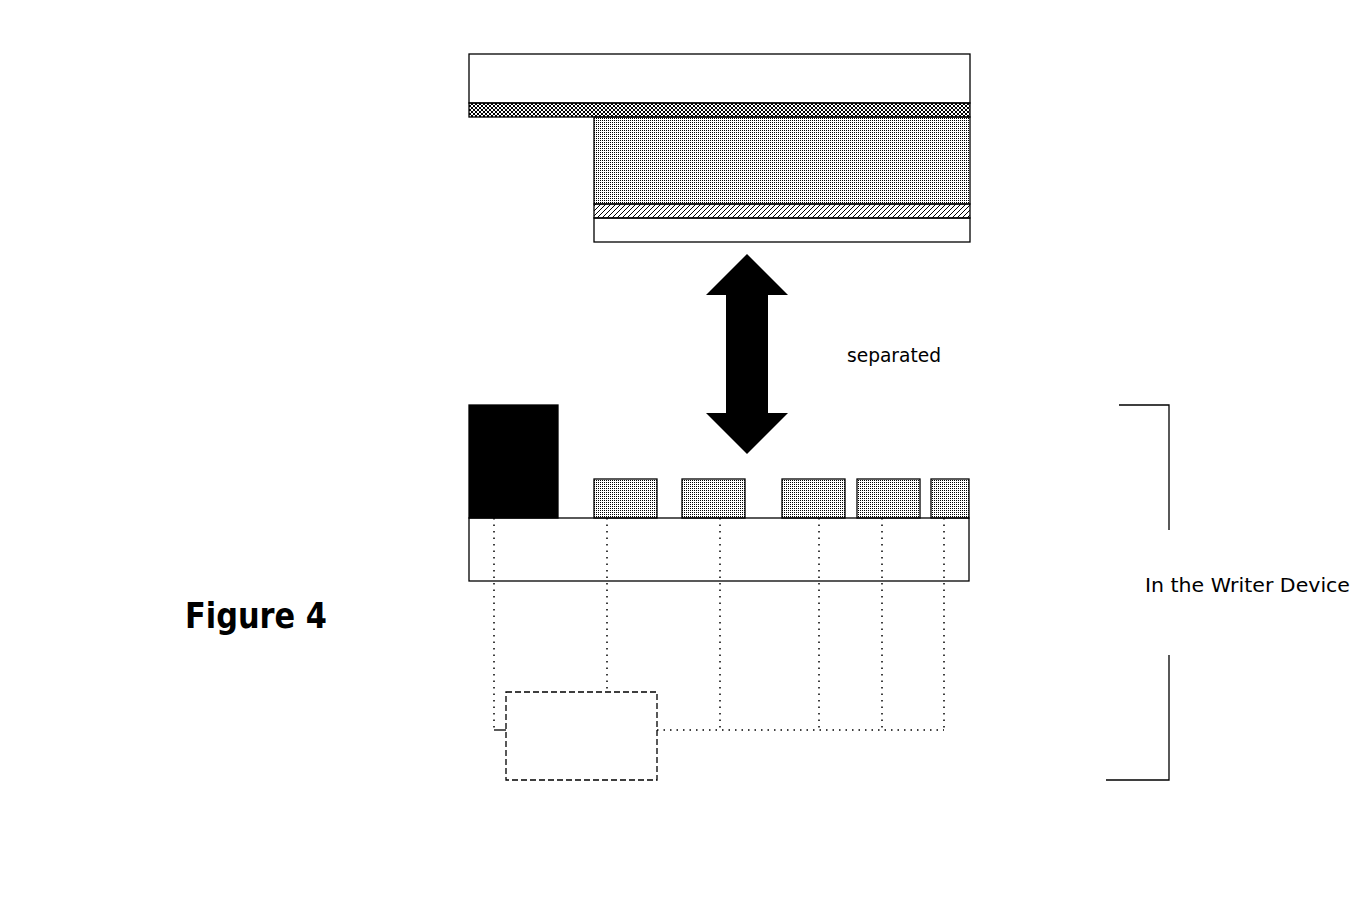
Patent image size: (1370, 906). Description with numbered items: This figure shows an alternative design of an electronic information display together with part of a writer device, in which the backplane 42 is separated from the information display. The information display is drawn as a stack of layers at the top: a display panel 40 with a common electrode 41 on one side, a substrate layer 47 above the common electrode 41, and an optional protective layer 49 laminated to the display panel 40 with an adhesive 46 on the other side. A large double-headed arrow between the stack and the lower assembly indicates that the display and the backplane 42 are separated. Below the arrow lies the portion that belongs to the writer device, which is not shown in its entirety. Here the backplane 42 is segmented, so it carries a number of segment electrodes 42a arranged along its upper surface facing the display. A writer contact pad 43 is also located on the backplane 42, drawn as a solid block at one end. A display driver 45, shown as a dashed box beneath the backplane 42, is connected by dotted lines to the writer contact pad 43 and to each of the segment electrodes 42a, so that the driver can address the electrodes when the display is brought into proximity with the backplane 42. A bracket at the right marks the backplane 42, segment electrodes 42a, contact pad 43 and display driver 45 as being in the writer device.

The substrate layer 47 is at (971, 67).
The common electrode 41 is at (971, 103).
The display panel 40 is at (971, 167).
The adhesive 46 is at (971, 205).
The protective layer 49 is at (832, 241).
The writer contact pad 43 is at (468, 455).
The segment electrodes 42a is at (970, 506).
The backplane 42 is at (970, 543).
The display driver 45 is at (719, 649).